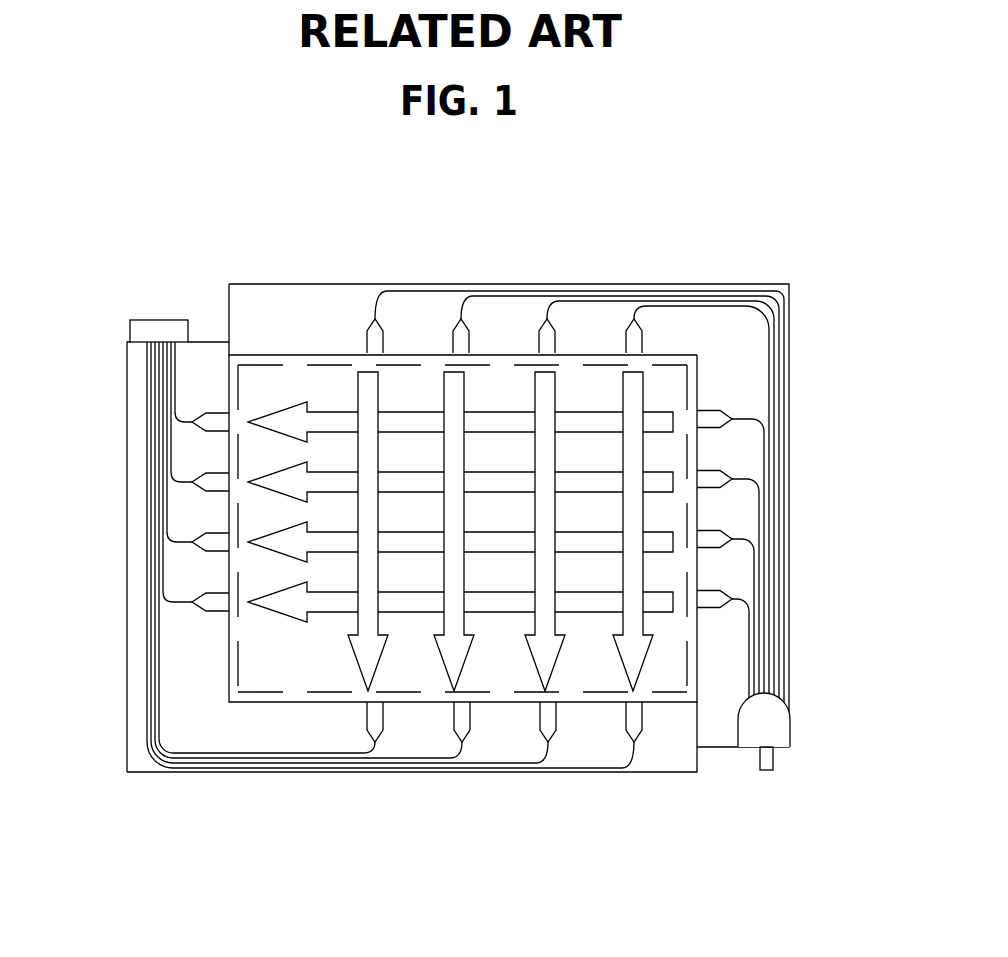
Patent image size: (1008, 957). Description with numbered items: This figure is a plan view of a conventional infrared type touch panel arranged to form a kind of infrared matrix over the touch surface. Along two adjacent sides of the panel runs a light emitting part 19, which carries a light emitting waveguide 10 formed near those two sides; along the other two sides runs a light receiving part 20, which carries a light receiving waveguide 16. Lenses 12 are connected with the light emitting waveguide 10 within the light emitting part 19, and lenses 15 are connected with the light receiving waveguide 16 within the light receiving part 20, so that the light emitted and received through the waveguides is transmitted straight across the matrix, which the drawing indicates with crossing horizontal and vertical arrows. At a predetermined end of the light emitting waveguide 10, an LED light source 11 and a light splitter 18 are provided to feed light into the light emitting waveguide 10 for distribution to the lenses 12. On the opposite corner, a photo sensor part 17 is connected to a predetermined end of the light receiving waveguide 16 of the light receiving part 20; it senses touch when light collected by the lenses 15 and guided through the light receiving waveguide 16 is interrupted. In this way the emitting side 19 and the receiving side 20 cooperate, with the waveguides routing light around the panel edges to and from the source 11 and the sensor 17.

The light emitting waveguide 10 is at (780, 486).
The LED light source 11 is at (770, 772).
The lens 12 is at (366, 339).
The lens 15 is at (205, 612).
The light receiving waveguide 16 is at (147, 520).
The photo sensor part 17 is at (147, 318).
The light splitter 18 is at (781, 726).
The light emitting part 19 is at (264, 300).
The light receiving part 20 is at (673, 760).